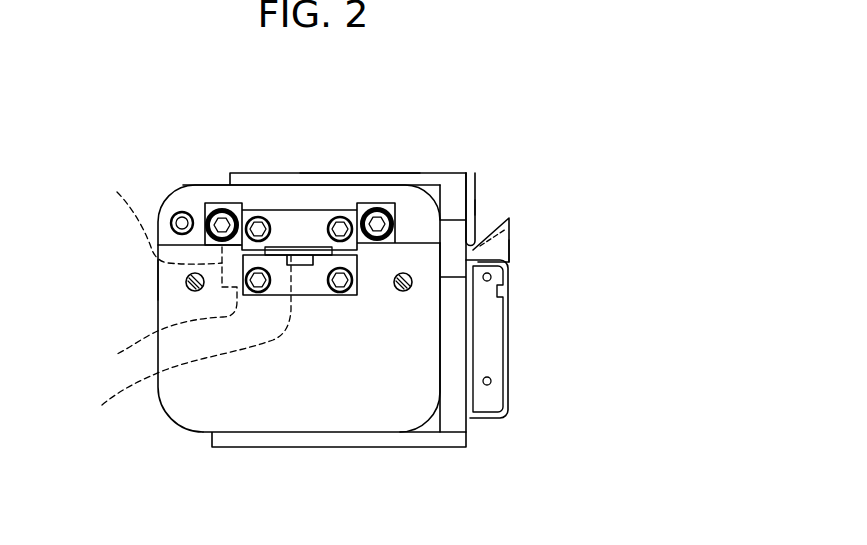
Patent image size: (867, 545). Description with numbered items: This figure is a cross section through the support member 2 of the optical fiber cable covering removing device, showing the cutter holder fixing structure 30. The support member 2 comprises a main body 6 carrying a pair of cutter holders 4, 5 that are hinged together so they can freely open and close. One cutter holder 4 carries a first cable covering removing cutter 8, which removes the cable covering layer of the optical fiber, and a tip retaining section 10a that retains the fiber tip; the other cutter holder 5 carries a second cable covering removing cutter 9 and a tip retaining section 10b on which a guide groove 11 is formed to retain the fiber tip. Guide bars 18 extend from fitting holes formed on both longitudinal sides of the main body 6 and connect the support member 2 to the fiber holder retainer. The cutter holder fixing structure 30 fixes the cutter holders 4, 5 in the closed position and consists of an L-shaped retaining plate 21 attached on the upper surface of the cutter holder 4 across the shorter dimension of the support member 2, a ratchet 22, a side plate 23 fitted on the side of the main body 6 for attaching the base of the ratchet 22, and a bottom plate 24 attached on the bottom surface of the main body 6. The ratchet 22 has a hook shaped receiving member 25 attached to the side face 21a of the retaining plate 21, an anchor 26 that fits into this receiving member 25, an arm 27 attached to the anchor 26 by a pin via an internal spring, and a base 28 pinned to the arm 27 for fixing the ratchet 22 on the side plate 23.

The support member 2 is at (145, 282).
The cutter holder 4 is at (178, 188).
The cutter holder 5 is at (167, 318).
The main body 6 is at (188, 397).
The first cable covering removing cutter 8 is at (291, 248).
The second cable covering removing cutter 9 is at (303, 266).
The tip retaining section 10a is at (306, 250).
The tip retaining section 10b is at (143, 215).
The guide groove 11 is at (180, 339).
The guide bar 18 is at (188, 288).
The L-shaped retaining plate 21 is at (422, 172).
The side face 21a is at (473, 187).
The ratchet 22 is at (525, 232).
The side plate 23 is at (455, 423).
The bottom plate 24 is at (393, 443).
The hook shaped receiving member 25 is at (478, 206).
The anchor 26 is at (509, 248).
The arm 27 is at (509, 363).
The base 28 is at (509, 287).
The cutter holder fixing structure 30 is at (368, 164).